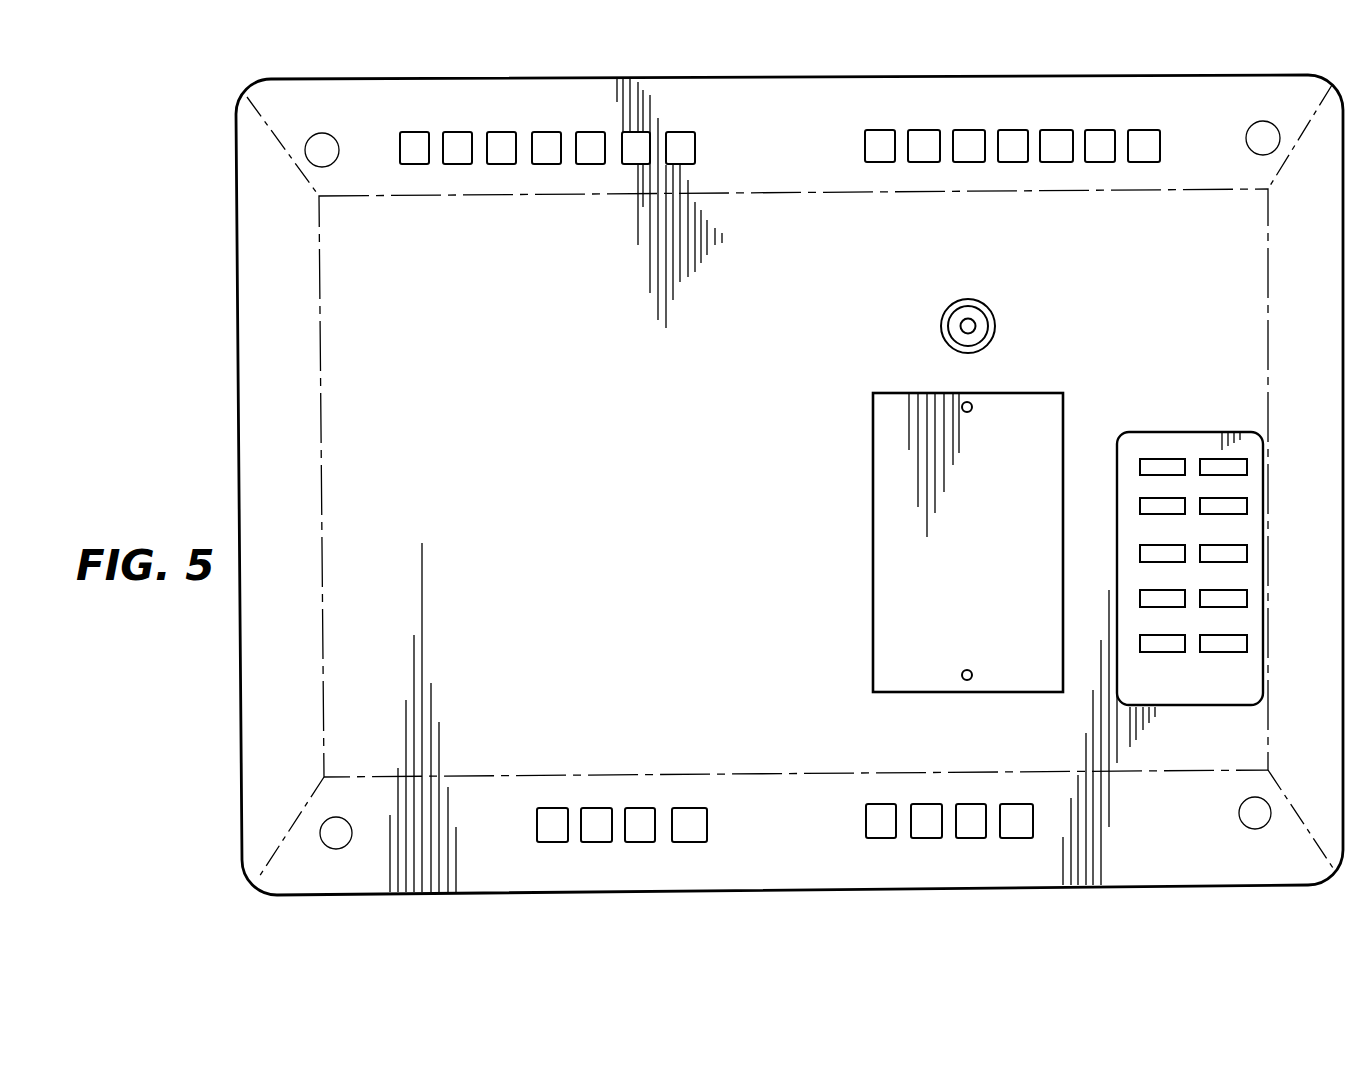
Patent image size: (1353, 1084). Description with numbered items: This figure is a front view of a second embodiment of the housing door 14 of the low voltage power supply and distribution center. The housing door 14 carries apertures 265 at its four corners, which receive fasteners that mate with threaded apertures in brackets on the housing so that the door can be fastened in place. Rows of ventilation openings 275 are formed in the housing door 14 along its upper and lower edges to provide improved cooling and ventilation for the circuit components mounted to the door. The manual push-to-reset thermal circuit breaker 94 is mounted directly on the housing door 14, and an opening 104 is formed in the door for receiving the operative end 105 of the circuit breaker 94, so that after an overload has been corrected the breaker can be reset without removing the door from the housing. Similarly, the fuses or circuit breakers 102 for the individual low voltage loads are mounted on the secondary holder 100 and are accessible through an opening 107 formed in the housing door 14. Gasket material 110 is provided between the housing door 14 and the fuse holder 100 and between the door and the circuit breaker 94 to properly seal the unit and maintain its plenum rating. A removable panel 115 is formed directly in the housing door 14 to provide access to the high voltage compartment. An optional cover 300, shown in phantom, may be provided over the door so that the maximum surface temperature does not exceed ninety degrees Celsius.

The housing door 14 is at (238, 723).
The cover 300 is at (320, 380).
The apertures 265 is at (313, 152).
The ventilation openings 275 is at (500, 160).
The manual push-to-reset thermal circuit breaker 94 is at (1088, 454).
The opening 104 is at (948, 325).
The gasket material 110 is at (990, 310).
The operative end 105 is at (968, 323).
The removable panel 115 is at (982, 571).
The holder 100 is at (1210, 541).
The opening 107 is at (1193, 438).
The fuses or circuit breakers 102 is at (1240, 600).